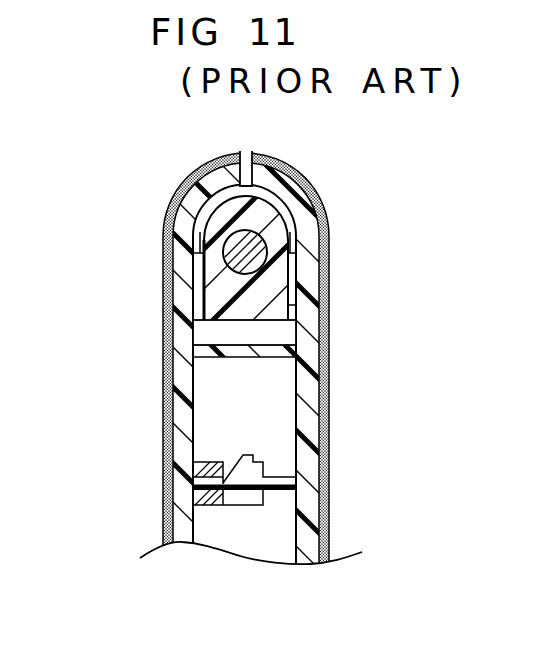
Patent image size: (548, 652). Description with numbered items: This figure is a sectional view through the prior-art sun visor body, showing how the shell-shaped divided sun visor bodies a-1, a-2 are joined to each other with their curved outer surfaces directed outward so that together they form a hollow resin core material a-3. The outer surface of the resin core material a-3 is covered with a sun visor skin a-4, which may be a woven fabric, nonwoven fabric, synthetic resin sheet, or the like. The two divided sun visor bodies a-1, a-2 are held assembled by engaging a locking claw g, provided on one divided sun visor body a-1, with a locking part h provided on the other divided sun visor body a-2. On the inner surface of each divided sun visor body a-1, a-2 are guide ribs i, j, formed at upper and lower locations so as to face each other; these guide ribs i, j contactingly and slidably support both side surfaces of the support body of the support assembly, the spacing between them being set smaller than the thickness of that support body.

The divided sun visor body a-1 is at (310, 281).
The divided sun visor body a-2 is at (186, 308).
The resin core material a-3 is at (162, 427).
The sun visor skin a-4 is at (162, 503).
The guide rib i is at (178, 223).
The guide rib j is at (200, 270).
The locking claw g is at (280, 477).
The locking part h is at (213, 505).